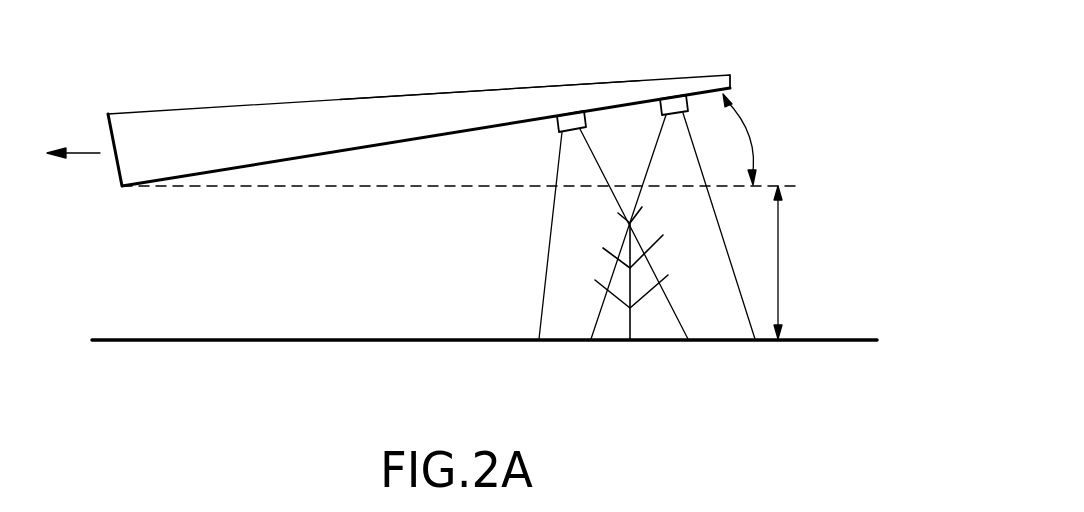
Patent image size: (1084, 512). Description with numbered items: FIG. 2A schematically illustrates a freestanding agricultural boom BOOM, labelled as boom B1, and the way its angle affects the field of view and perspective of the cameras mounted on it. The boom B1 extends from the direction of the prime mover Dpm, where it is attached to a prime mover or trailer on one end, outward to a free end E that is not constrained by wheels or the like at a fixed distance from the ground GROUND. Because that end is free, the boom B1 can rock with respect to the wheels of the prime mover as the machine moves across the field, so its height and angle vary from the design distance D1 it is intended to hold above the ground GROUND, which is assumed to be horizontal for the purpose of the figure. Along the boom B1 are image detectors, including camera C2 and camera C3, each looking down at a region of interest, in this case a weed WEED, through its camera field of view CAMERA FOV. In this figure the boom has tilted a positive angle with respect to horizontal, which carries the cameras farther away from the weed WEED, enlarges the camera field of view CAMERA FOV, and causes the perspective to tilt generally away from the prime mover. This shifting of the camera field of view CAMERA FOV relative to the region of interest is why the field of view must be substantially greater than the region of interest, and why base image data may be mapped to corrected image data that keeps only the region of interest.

The boom BOOM is at (250, 107).
The boom B1 is at (428, 96).
The free end E is at (732, 80).
The direction of the prime mover Dpm is at (73, 172).
The camera C3 is at (557, 128).
The camera C2 is at (660, 112).
The camera field of view CAMERA FOV is at (563, 313).
The weed WEED is at (630, 320).
The design distance D1 is at (792, 262).
The ground GROUND is at (140, 342).